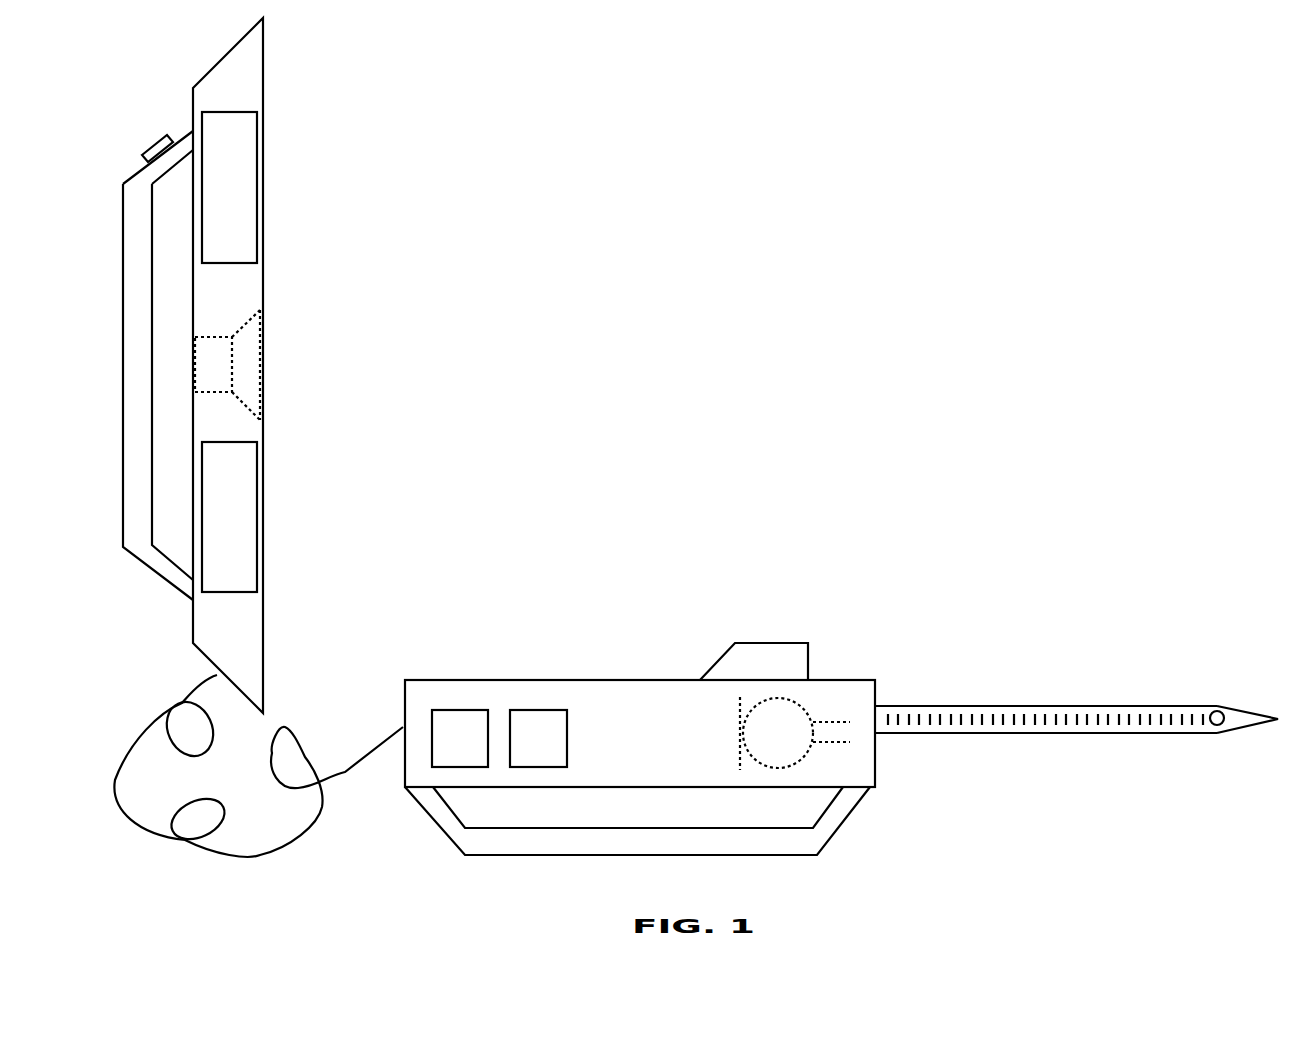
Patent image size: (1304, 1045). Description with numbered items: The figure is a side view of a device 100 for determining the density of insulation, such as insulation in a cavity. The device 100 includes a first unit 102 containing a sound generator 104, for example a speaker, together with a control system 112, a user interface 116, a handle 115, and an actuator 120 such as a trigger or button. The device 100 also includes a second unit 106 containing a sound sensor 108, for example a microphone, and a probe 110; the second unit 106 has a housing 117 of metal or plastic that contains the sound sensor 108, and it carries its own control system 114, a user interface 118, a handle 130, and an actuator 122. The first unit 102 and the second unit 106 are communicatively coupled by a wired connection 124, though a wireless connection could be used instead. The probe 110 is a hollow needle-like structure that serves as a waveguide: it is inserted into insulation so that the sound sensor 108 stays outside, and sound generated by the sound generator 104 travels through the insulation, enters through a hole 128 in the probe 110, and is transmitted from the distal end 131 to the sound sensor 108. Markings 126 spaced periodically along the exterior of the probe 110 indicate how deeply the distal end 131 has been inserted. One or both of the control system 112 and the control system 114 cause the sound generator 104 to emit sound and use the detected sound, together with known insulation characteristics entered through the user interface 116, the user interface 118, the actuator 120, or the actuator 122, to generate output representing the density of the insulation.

The device 100 is at (1120, 114).
The first unit 102 is at (309, 84).
The sound generator 104 is at (248, 377).
The second unit 106 is at (897, 642).
The sound sensor 108 is at (742, 725).
The probe 110 is at (1023, 703).
The control system 112 is at (229, 187).
The control system 114 is at (460, 738).
The handle 115 is at (133, 216).
The user interface 116 is at (229, 517).
The housing 117 is at (527, 695).
The user interface 118 is at (538, 738).
The actuator 120 is at (158, 142).
The actuator 122 is at (772, 662).
The wired connection 124 is at (305, 833).
The markings 126 is at (1056, 711).
The hole 128 is at (1217, 712).
The handle 130 is at (538, 843).
The distal end 131 is at (1230, 710).